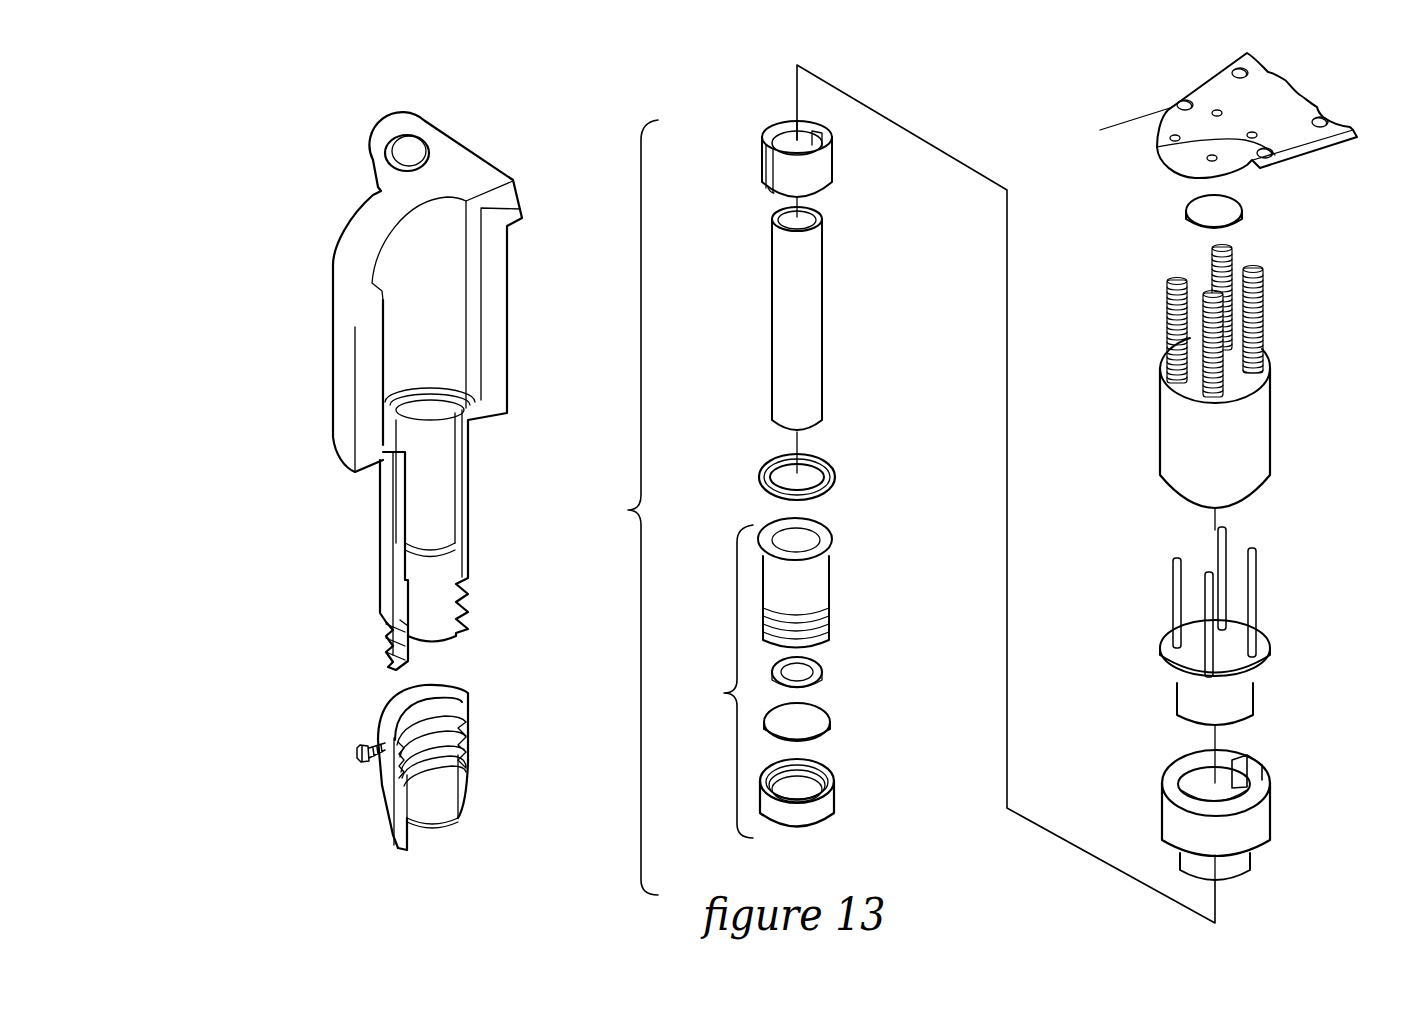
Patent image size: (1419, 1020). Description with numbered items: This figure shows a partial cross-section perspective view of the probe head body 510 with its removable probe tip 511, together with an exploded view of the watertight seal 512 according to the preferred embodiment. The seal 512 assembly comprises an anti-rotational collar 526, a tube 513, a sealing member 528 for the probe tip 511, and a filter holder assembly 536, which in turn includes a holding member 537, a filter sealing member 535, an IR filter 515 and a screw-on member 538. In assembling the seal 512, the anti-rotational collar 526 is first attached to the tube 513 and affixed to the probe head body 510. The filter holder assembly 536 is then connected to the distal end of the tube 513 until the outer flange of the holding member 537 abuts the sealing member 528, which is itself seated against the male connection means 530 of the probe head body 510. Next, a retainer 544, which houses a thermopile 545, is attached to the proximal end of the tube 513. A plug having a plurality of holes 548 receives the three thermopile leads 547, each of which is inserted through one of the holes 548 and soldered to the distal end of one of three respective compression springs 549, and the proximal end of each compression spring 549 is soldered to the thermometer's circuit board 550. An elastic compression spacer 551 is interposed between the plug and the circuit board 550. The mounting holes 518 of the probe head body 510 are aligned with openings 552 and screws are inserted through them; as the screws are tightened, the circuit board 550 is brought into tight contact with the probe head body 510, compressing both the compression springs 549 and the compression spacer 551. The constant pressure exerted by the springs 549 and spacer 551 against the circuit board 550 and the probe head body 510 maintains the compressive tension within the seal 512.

The probe head body 510 is at (318, 402).
The probe tip 511 is at (475, 776).
The watertight seal 512 is at (630, 510).
The tube 513 is at (822, 408).
The IR filter 515 is at (820, 720).
The mounting holes 518 is at (408, 153).
The anti-rotational collar 526 is at (823, 178).
The sealing member 528 is at (835, 478).
The male connection means 530 is at (392, 648).
The filter sealing member 535 is at (822, 665).
The filter holder assembly 536 is at (722, 693).
The holding member 537 is at (830, 573).
The screw-on member 538 is at (366, 757).
The retainer 544 is at (1272, 810).
The thermopile 545 is at (1257, 688).
The thermopile leads 547 is at (1178, 580).
The holes 548 is at (1270, 418).
The compression springs 549 is at (1190, 307).
The circuit board 550 is at (1332, 152).
The compression spacer 551 is at (1187, 222).
The openings 552 is at (1160, 152).